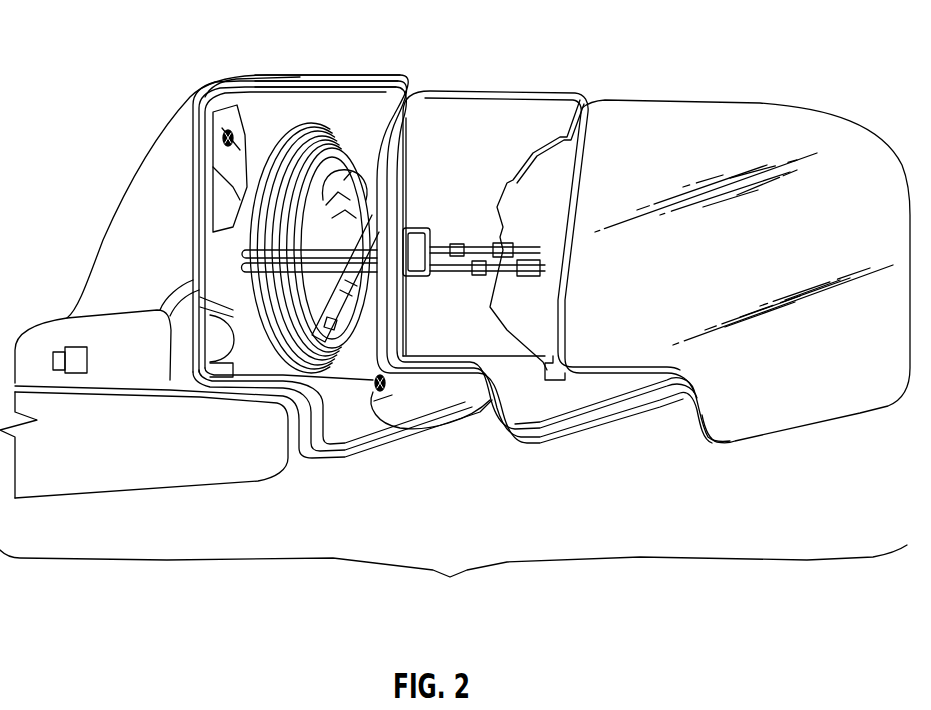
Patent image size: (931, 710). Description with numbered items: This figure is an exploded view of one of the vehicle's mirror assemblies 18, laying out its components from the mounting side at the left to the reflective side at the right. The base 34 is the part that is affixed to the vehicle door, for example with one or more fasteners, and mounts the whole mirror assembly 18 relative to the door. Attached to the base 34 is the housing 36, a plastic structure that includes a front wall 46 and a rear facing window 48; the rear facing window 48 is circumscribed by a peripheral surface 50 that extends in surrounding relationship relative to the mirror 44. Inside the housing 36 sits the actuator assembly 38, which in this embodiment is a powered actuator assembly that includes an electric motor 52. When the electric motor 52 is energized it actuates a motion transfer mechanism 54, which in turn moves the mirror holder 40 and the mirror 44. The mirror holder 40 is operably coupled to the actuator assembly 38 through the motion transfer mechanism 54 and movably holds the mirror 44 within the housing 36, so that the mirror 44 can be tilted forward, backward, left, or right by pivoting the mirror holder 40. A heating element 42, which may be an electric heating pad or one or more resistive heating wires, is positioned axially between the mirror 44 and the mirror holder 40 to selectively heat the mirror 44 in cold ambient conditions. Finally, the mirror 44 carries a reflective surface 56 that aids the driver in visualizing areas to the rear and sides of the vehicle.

The mirror assembly 18 is at (453, 582).
The base 34 is at (100, 473).
The housing 36 is at (180, 152).
The actuator assembly 38 is at (330, 134).
The mirror holder 40 is at (465, 130).
The heating element 42 is at (535, 186).
The mirror 44 is at (720, 95).
The front wall 46 is at (110, 247).
The rear facing window 48 is at (280, 100).
The peripheral surface 50 is at (232, 80).
The electric motor 52 is at (333, 208).
The motion transfer mechanism 54 is at (345, 138).
The reflective surface 56 is at (800, 120).